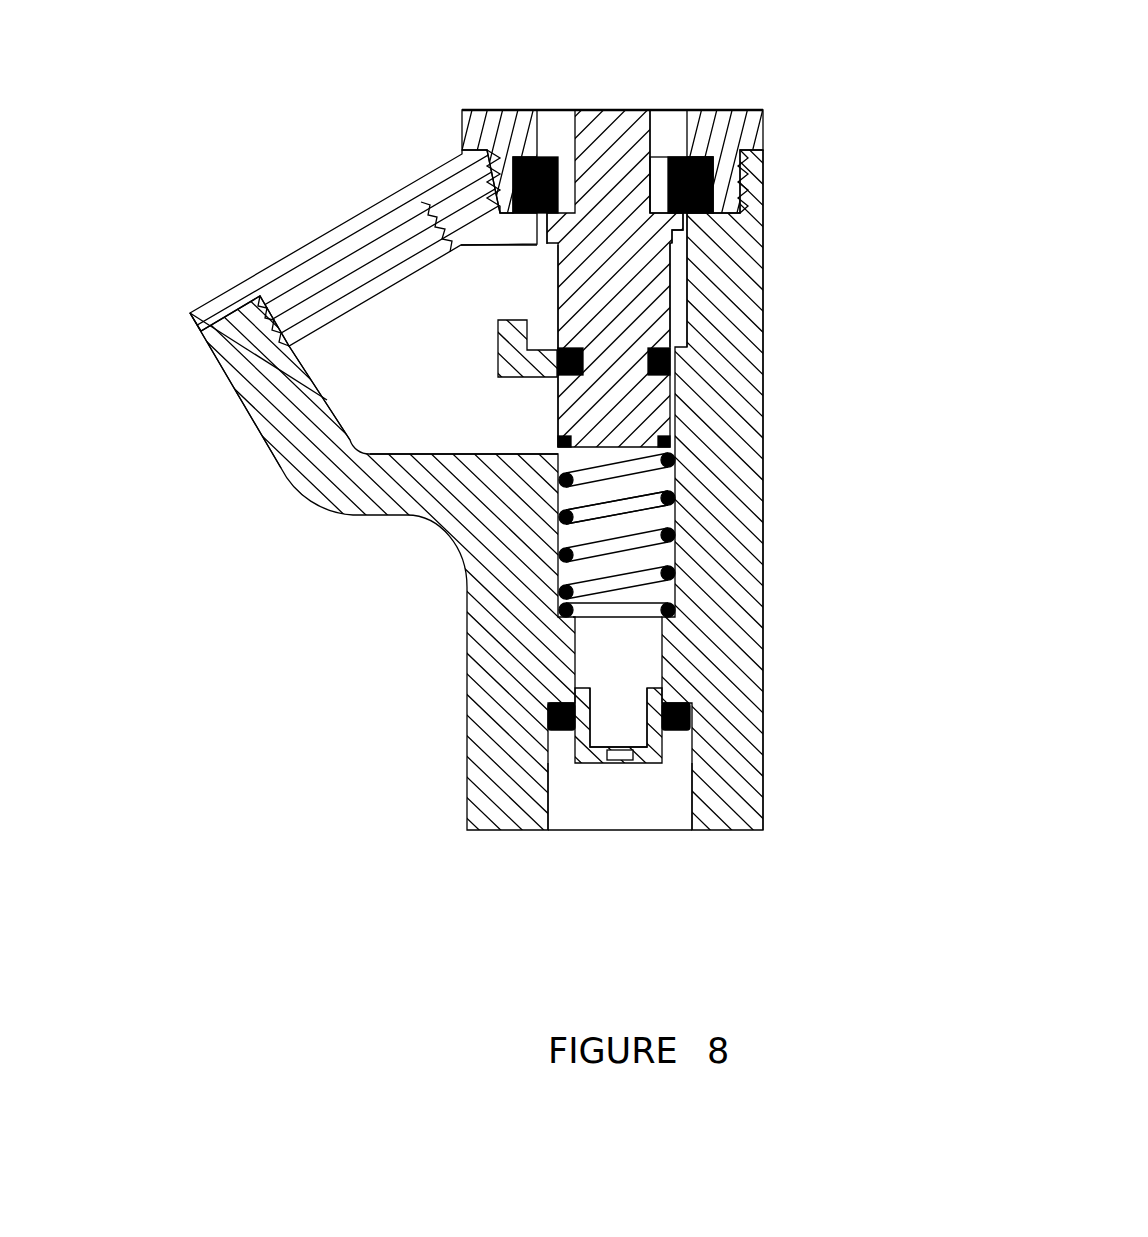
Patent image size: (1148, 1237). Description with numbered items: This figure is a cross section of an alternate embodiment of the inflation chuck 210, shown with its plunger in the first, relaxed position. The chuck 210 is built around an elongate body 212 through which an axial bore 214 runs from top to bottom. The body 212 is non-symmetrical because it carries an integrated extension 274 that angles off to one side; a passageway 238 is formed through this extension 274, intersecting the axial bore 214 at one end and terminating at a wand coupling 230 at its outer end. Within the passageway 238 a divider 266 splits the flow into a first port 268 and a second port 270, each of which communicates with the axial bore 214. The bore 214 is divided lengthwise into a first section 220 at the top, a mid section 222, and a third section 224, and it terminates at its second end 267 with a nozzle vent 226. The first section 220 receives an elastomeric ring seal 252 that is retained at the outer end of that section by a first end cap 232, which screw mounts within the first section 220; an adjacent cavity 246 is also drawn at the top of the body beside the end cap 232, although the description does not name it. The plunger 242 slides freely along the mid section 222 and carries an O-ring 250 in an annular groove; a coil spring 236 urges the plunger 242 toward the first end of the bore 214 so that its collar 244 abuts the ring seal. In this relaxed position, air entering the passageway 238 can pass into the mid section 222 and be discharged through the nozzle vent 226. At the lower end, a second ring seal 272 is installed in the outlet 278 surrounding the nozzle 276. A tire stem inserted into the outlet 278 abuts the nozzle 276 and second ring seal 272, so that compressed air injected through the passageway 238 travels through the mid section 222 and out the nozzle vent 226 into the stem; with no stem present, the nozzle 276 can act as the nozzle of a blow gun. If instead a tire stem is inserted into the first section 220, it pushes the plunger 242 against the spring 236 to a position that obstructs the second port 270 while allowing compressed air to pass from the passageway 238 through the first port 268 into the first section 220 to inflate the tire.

The inflation chuck 210 is at (574, 618).
The elongate body 212 is at (842, 490).
The axial bore 214 is at (696, 824).
The first section 220 is at (597, 121).
The mid section 222 is at (718, 499).
The third section 224 is at (566, 618).
The nozzle vent 226 is at (728, 849).
The wand coupling 230 is at (377, 248).
The first end cap 232 is at (753, 124).
The coil spring 236 is at (724, 523).
The passageway 238 is at (354, 476).
The plunger 242 is at (781, 278).
The collar 244 is at (778, 208).
The bore 246 is at (606, 110).
The O-ring 250 is at (720, 341).
The elastomeric ring seal 252 is at (686, 140).
The divider 266 is at (574, 618).
The second end 267 is at (728, 733).
The first port 268 is at (422, 200).
The second port 270 is at (411, 434).
The second ring seal 272 is at (517, 763).
The integrated extension 274 is at (206, 394).
The nozzle 276 is at (574, 618).
The outlet 278 is at (643, 864).